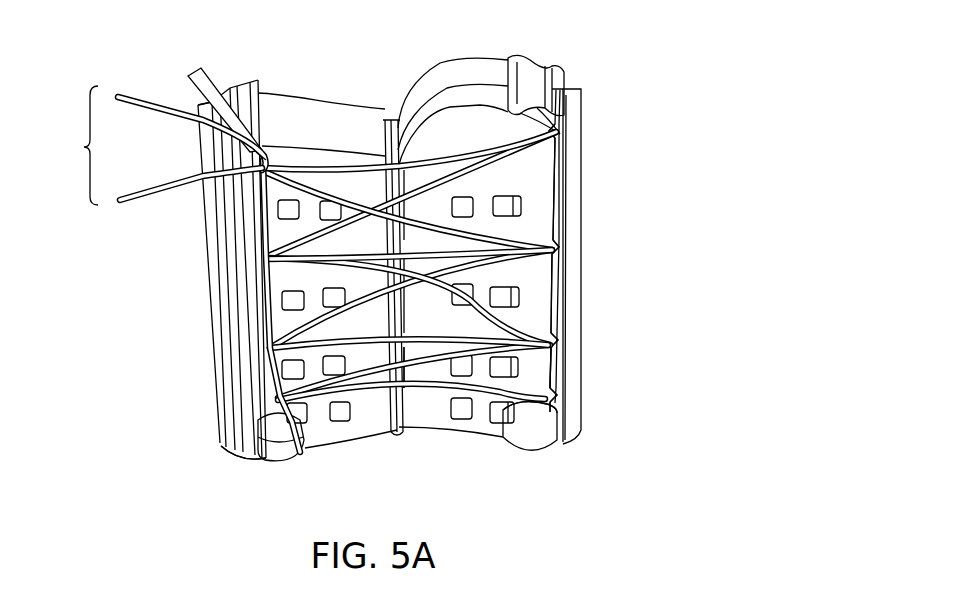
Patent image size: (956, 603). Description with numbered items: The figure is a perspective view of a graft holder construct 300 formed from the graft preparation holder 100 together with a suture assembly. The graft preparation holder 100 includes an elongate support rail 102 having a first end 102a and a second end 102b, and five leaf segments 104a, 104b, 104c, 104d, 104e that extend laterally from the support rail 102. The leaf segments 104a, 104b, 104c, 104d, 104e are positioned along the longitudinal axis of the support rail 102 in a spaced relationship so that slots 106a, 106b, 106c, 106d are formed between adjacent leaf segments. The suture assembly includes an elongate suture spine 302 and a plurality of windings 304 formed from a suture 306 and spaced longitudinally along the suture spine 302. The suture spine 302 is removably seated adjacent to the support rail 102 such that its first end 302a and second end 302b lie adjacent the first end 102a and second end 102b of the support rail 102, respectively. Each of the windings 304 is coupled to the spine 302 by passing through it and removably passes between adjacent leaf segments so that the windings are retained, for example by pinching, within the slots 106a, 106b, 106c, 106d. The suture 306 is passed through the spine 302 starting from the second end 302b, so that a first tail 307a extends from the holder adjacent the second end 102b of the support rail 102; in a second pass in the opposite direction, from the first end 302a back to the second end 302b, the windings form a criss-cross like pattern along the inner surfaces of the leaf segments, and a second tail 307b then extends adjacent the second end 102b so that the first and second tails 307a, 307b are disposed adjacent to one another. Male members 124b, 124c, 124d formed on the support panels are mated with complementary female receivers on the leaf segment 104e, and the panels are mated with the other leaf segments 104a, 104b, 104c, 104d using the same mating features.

The graft preparation holder 100 is at (620, 267).
The elongate support rail 102 is at (233, 302).
The first end of the support rail 102a is at (232, 447).
The second end of the support rail 102b is at (200, 109).
The leaf segment 104a is at (537, 123).
The leaf segment 104b is at (537, 208).
The leaf segment 104c is at (537, 313).
The leaf segment 104d is at (548, 358).
The leaf segment 104e is at (537, 410).
The slot 106a is at (557, 131).
The slot 106b is at (557, 244).
The slot 106c is at (557, 341).
The slot 106d is at (540, 372).
The male member 124b is at (340, 428).
The male member 124c is at (463, 418).
The male member 124d is at (500, 420).
The graft holder construct 300 is at (377, 227).
The suture spine 302 is at (263, 141).
The first end of the spine 302a is at (273, 413).
The second end of the spine 302b is at (201, 68).
The windings 304 is at (376, 162).
The suture 306 is at (75, 145).
The first tail of the suture 307a is at (147, 113).
The second tail of the suture 307b is at (146, 201).